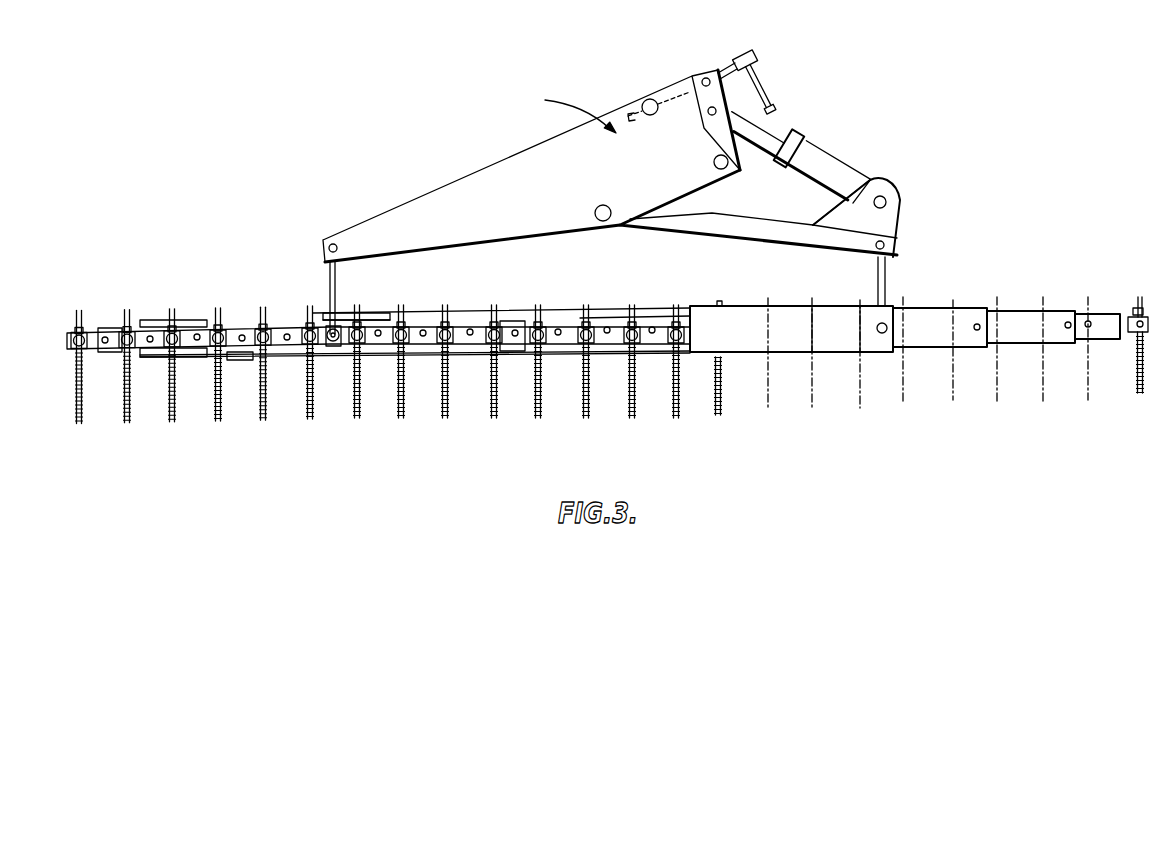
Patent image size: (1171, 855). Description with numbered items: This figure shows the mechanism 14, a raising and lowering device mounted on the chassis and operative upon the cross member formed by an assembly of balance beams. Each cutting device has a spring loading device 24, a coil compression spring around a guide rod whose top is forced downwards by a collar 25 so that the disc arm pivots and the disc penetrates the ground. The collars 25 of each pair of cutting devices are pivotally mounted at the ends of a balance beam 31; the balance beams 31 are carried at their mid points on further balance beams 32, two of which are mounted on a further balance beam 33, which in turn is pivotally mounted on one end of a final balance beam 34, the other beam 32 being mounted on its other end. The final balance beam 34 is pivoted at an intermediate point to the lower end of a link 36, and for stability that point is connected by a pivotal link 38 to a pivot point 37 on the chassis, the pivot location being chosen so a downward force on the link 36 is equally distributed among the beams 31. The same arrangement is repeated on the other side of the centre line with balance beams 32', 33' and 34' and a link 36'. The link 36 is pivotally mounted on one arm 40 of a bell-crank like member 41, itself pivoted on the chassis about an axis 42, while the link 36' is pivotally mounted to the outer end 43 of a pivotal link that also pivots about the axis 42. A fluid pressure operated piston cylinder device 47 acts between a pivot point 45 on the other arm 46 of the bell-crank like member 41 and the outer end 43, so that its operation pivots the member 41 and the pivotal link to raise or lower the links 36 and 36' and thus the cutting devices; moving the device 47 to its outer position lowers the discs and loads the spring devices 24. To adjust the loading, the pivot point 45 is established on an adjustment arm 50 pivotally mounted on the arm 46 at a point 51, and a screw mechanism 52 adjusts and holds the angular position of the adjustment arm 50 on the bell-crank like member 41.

The mechanism 14 is at (603, 112).
The spring loading device 24 is at (76, 392).
The collar 25 is at (81, 324).
The balance beam 31 is at (115, 349).
The further balance beam 32 is at (313, 356).
The further balance beam 33 is at (196, 360).
The final balance beam 34 is at (378, 354).
The link 36 is at (365, 286).
The link 36' is at (913, 281).
The pivot point 37 is at (607, 334).
The pivotal link 38 is at (560, 307).
The arm 40 is at (470, 212).
The bell-crank like member 41 is at (530, 153).
The axis 42 is at (596, 212).
The outer end 43 is at (886, 243).
The pivot point 45 is at (709, 114).
The arm 46 is at (680, 167).
The fluid pressure operated piston cylinder device 47 is at (832, 168).
The adjustment arm 50 is at (700, 95).
The point 51 is at (714, 160).
The screw mechanism 52 is at (758, 62).
The further balance beam 32' is at (1085, 355).
The further balance beam 33' is at (1031, 368).
The final balance beam 34' is at (940, 364).